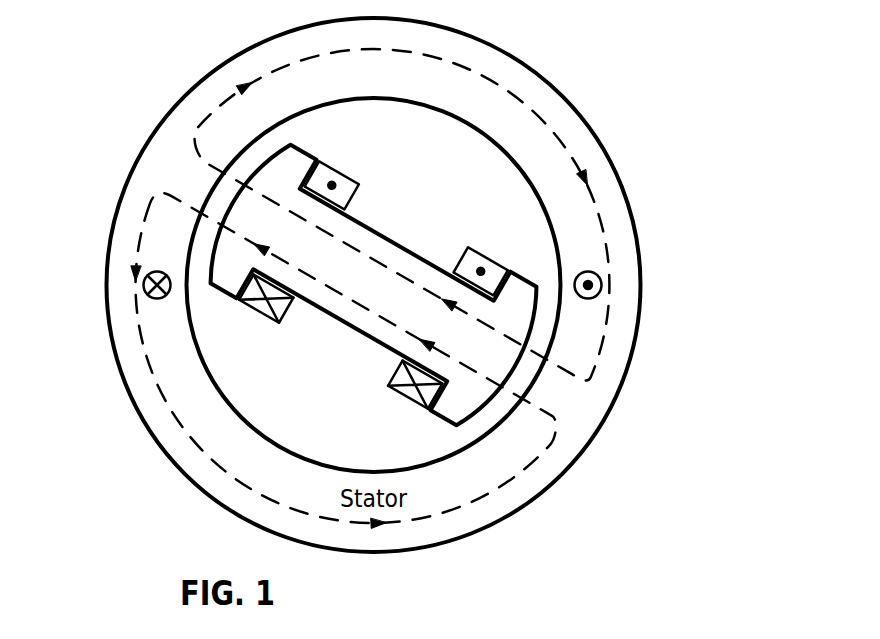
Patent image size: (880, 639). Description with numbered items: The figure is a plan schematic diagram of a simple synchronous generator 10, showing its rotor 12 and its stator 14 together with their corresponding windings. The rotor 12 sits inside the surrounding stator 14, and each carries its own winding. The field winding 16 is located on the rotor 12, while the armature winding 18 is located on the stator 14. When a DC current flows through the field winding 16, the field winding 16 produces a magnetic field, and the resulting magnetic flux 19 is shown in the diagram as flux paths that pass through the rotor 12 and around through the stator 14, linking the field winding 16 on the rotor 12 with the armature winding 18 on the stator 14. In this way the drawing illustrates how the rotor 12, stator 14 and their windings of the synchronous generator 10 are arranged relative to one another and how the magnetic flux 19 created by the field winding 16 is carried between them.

The synchronous generator 10 is at (686, 176).
The rotor 12 is at (525, 334).
The stator 14 is at (530, 487).
The field winding 16 is at (108, 140).
The armature winding 18 is at (162, 300).
The magnetic flux 19 is at (555, 425).